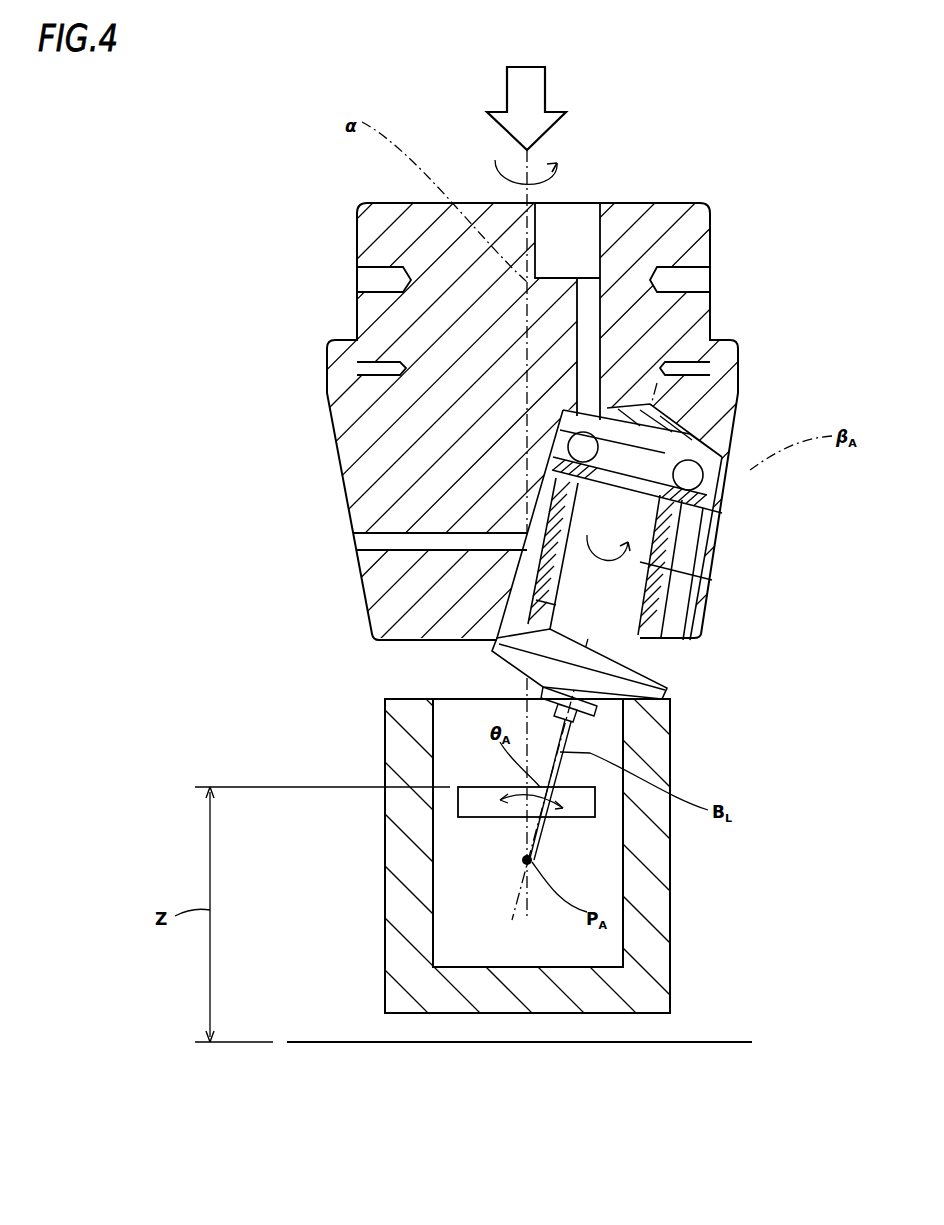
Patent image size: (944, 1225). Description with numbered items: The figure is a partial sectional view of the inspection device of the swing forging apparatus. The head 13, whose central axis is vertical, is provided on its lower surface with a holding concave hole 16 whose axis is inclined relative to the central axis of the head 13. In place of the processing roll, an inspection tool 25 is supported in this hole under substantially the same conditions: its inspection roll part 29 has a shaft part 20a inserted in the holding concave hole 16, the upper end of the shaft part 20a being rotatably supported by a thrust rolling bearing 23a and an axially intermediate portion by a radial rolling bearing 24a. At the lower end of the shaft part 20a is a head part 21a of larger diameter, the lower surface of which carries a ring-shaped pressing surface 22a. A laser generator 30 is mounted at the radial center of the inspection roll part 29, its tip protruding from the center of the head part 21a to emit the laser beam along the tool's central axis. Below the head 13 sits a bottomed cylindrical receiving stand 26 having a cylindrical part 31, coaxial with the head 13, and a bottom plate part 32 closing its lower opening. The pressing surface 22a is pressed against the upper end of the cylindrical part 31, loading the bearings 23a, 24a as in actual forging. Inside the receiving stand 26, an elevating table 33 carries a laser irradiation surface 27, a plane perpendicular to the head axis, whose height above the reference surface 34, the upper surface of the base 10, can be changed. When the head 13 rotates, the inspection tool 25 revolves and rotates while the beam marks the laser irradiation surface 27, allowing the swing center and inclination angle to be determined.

The base 10 is at (713, 1060).
The head 13 is at (413, 418).
The holding concave hole 16 is at (540, 499).
The shaft part 20a is at (693, 578).
The head part 21a is at (628, 670).
The pressing surface 22a is at (625, 704).
The thrust rolling bearing 23a is at (695, 415).
The radial rolling bearing 24a is at (718, 540).
The inspection tool 25 is at (530, 577).
The receiving stand 26 is at (400, 908).
The laser irradiation surface 27 is at (490, 785).
The inspection roll part 29 is at (635, 612).
The laser generator 30 is at (570, 745).
The cylindrical part 31 is at (657, 853).
The bottom plate part 32 is at (578, 987).
The elevating table 33 is at (477, 803).
The reference surface 34 is at (370, 1038).